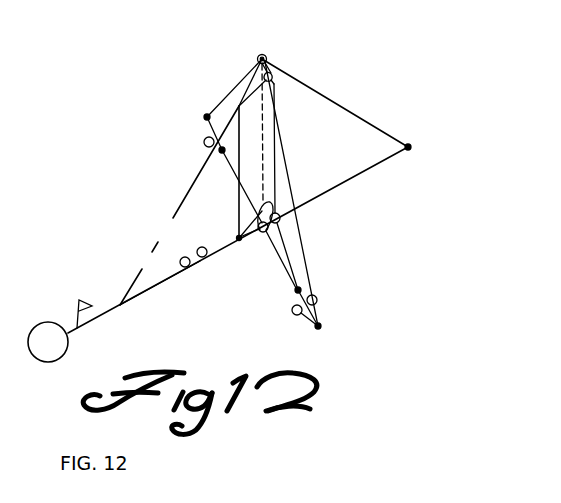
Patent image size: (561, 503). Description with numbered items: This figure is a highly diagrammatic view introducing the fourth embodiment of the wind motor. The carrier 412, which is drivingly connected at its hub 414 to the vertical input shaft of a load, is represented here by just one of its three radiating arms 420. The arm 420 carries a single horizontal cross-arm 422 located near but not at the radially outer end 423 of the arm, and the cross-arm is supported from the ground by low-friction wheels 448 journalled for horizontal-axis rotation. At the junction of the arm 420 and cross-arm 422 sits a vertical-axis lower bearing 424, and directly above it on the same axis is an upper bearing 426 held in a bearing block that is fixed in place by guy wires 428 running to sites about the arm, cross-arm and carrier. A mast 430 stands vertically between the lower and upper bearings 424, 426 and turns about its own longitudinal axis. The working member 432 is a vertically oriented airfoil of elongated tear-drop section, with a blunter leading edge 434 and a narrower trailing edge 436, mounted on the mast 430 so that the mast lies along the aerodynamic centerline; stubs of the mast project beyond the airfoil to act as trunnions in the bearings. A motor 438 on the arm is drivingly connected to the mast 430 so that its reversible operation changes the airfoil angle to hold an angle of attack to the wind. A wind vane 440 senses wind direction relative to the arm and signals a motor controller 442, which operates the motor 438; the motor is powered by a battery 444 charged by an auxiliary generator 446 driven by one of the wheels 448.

The carrier 412 is at (248, 240).
The hub 414 is at (69, 344).
The arm 420 is at (156, 287).
The cross-arm 422 is at (293, 268).
The radially outer end 423 is at (411, 147).
The lower bearing 424 is at (266, 234).
The upper bearing 426 is at (278, 40).
The guy wires 428 is at (340, 103).
The mast 430 is at (266, 127).
The working member 432 is at (268, 164).
The leading edge 434 is at (273, 76).
The trailing edge 436 is at (238, 212).
The motor 438 is at (281, 218).
The wind vane 440 is at (80, 298).
The motor controller 442 is at (200, 248).
The battery 444 is at (180, 262).
The auxiliary generator 446 is at (317, 298).
The wheels 448 is at (292, 313).